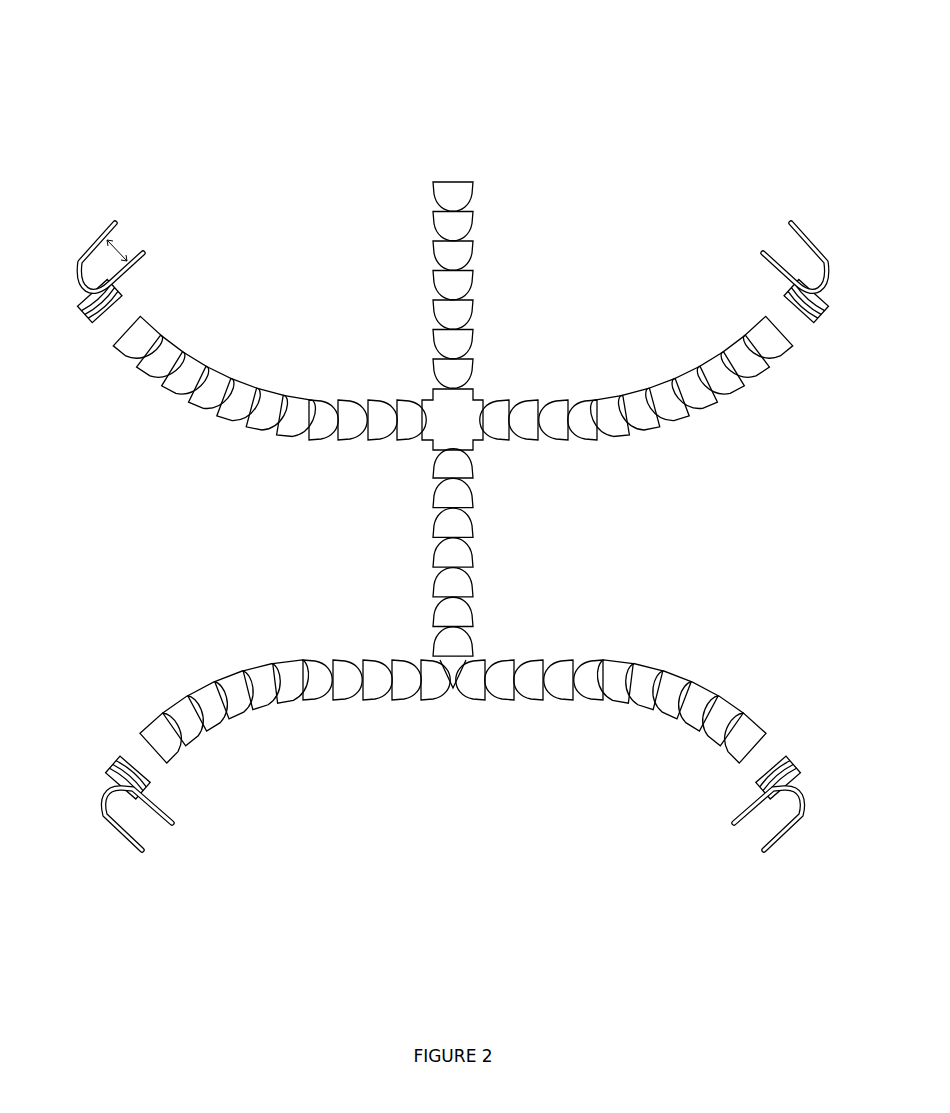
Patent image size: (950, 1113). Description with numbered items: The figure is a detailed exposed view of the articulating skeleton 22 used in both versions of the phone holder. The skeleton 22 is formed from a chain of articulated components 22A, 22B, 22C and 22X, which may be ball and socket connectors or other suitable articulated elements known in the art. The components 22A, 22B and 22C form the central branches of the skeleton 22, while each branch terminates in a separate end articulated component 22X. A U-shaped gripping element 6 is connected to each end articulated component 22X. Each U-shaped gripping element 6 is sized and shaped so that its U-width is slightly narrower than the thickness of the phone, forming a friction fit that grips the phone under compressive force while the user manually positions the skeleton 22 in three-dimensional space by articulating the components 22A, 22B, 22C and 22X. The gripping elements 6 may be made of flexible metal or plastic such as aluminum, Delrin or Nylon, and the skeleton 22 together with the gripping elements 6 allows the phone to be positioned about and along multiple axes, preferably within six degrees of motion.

The articulating skeleton 22 is at (175, 125).
The articulated component 22A is at (475, 282).
The articulated component 22B is at (475, 552).
The articulated component 22C is at (248, 382).
The end articulated component 22X is at (88, 312).
The U-shaped gripping element 6 is at (132, 272).